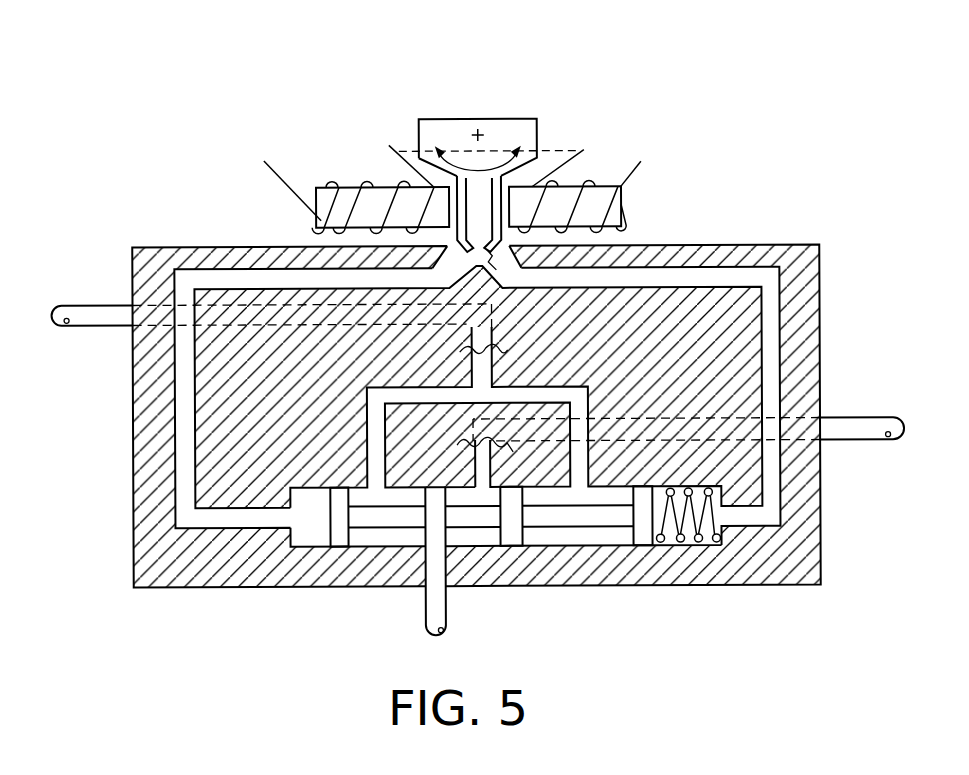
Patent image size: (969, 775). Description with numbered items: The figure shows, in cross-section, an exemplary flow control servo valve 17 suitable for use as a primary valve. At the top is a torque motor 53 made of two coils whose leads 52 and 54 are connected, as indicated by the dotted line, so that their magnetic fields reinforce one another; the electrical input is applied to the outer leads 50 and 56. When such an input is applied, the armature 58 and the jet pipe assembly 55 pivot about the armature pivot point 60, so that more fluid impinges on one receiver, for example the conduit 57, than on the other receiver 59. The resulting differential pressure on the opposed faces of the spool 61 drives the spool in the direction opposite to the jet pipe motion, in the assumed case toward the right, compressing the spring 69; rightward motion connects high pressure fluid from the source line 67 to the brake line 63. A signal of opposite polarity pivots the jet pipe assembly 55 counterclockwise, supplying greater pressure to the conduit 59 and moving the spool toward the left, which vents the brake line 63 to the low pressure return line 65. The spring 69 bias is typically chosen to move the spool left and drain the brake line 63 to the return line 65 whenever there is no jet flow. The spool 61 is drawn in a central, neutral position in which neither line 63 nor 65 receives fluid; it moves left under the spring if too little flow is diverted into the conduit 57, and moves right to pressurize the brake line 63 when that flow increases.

The flow control servo valve 17 is at (658, 120).
The lead 50 is at (268, 163).
The lead 52 is at (400, 157).
The torque motor 53 is at (332, 183).
The lead 54 is at (586, 150).
The jet pipe assembly 55 is at (493, 301).
The lead 56 is at (637, 174).
The receiver conduit 57 is at (205, 280).
The armature 58 is at (538, 130).
The receiver conduit 59 is at (720, 280).
The armature pivot point 60 is at (480, 130).
The spool 61 is at (390, 517).
The brake line 63 is at (445, 612).
The low pressure return line 65 is at (852, 443).
The source line 67 is at (93, 304).
The spring 69 is at (680, 546).